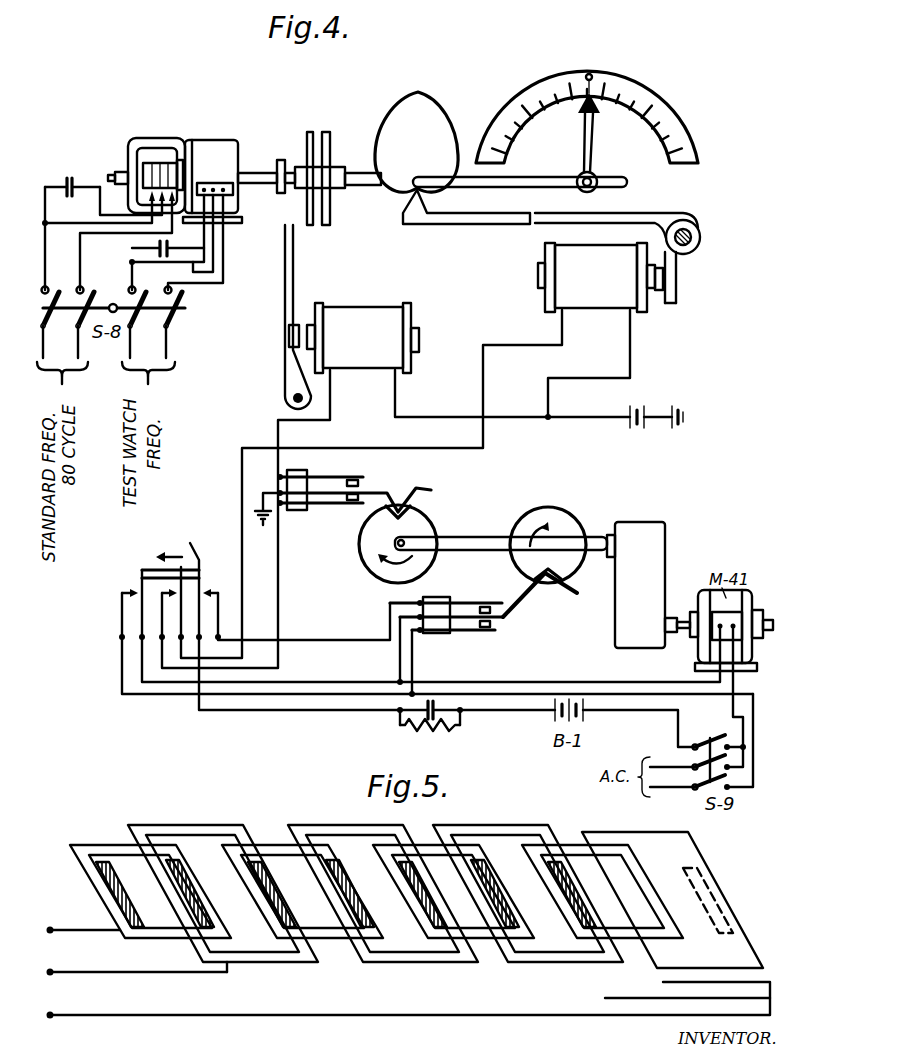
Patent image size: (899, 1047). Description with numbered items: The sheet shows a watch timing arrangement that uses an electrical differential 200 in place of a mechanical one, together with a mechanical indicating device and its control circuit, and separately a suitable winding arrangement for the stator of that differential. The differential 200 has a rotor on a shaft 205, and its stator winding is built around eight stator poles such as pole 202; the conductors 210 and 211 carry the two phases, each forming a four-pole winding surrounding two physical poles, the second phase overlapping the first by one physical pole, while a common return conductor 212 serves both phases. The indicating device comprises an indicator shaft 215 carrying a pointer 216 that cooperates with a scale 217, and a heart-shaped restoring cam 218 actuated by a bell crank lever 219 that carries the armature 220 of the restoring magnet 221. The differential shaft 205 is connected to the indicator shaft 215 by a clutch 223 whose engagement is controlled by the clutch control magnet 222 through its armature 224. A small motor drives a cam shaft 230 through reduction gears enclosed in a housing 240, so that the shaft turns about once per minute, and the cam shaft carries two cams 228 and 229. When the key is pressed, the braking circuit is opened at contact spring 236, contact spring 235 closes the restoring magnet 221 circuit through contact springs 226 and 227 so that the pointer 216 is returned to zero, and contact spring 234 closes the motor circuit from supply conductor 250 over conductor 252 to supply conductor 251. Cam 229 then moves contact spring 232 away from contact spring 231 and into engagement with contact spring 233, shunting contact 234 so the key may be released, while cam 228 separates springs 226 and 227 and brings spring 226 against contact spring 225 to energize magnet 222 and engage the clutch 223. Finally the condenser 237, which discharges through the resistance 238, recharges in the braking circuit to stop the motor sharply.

In FIG. 4, the electrical differential 200 is at (205, 146).
In FIG. 4, the shaft 205 is at (265, 165).
In FIG. 4, the first phase conductor 210 is at (207, 231).
In FIG. 5, the first phase conductor 210 is at (70, 934).
In FIG. 4, the second phase conductor 211 is at (215, 254).
In FIG. 5, the second phase conductor 211 is at (95, 975).
In FIG. 4, the common return conductor 212 is at (225, 280).
In FIG. 5, the common return conductor 212 is at (172, 1018).
In FIG. 4, the indicator shaft 215 is at (525, 180).
In FIG. 4, the pointer 216 is at (592, 157).
In FIG. 4, the scale 217 is at (655, 103).
In FIG. 4, the heart-shaped restoring cam 218 is at (428, 110).
In FIG. 4, the bell crank lever 219 is at (693, 219).
In FIG. 4, the armature 220 is at (664, 281).
In FIG. 4, the restoring magnet 221 is at (593, 305).
In FIG. 4, the clutch control magnet 222 is at (388, 296).
In FIG. 4, the clutch 223 is at (317, 226).
In FIG. 4, the armature 224 is at (289, 336).
In FIG. 4, the contact spring 225 is at (325, 478).
In FIG. 4, the contact spring 226 is at (322, 504).
In FIG. 4, the contact spring 227 is at (343, 508).
In FIG. 4, the cam 228 is at (421, 527).
In FIG. 4, the cam 229 is at (560, 513).
In FIG. 4, the cam shaft 230 is at (599, 538).
In FIG. 4, the contact spring 231 is at (466, 603).
In FIG. 4, the contact spring 232 is at (505, 620).
In FIG. 4, the contact spring 233 is at (455, 632).
In FIG. 4, the contact spring 234 is at (122, 607).
In FIG. 4, the contact spring 235 is at (186, 587).
In FIG. 4, the contact spring 236 is at (201, 615).
In FIG. 4, the condenser 237 is at (433, 726).
In FIG. 4, the resistance 238 is at (405, 728).
In FIG. 4, the housing 240 is at (654, 557).
In FIG. 4, the alternating current supply conductor 250 is at (668, 791).
In FIG. 4, the alternating current supply conductor 251 is at (665, 763).
In FIG. 4, the conductor 252 is at (754, 731).
In FIG. 5, the stator pole 202 is at (177, 860).